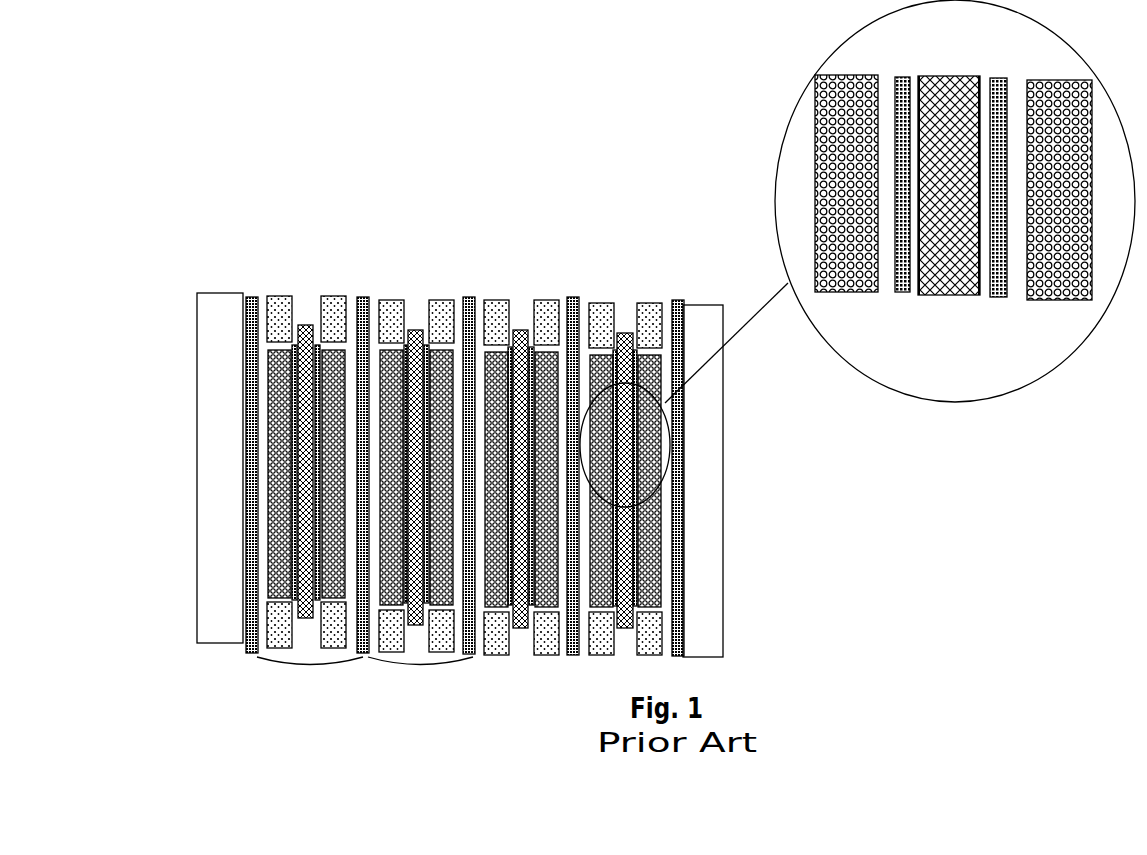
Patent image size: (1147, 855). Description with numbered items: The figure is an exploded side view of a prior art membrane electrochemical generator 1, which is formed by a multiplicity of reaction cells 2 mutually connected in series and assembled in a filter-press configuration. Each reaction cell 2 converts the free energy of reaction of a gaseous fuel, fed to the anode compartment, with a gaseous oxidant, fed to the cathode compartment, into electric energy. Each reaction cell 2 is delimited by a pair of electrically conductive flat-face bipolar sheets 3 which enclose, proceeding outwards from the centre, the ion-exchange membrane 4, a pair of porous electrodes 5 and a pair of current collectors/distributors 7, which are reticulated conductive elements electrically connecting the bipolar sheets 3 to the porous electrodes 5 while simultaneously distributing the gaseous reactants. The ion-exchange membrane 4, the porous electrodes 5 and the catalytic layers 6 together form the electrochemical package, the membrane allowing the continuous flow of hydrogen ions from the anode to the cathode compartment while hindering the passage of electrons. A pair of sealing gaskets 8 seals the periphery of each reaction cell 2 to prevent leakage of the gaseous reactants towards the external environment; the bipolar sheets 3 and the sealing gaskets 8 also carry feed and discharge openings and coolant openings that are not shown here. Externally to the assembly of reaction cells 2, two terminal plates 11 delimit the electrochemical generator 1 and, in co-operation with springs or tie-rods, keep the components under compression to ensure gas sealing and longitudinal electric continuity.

The electrochemical generator 1 is at (438, 192).
The reaction cell 2 is at (365, 676).
The bipolar sheet 3 is at (251, 297).
The ion-exchange membrane 4 is at (306, 325).
The porous electrode 5 is at (904, 292).
The catalytic layer 6 is at (918, 278).
The current collector/distributor 7 is at (841, 292).
The sealing gasket 8 is at (281, 297).
The terminal plate 11 is at (216, 360).